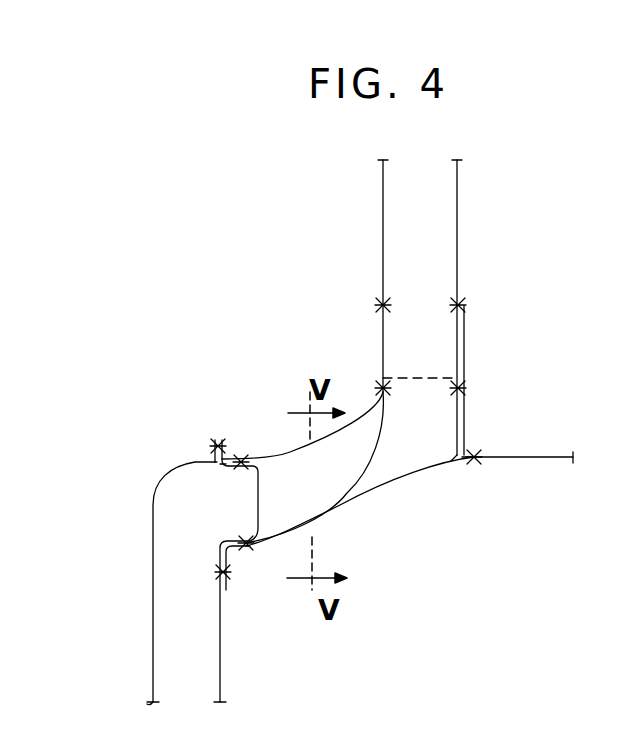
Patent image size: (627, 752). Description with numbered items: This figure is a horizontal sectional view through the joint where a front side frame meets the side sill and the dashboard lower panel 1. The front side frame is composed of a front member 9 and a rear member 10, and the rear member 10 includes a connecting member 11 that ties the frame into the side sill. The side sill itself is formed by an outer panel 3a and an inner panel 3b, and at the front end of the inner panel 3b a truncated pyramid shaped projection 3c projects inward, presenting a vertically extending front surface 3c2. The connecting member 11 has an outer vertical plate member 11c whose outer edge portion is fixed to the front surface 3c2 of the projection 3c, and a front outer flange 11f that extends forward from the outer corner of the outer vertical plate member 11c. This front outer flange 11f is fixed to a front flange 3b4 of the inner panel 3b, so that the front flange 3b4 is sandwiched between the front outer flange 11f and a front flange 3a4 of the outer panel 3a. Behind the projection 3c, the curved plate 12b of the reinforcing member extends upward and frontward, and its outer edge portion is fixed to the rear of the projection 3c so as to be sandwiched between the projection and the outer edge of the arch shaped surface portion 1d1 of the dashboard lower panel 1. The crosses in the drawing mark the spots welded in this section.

The dashboard lower panel 1 is at (533, 456).
The arch shaped surface portion 1d1 is at (393, 484).
The outer panel 3a is at (153, 666).
The front flange 3a4 is at (213, 460).
The inner panel 3b is at (226, 661).
The front flange 3b4 is at (217, 440).
The projection 3c is at (260, 492).
The front surface 3c2 is at (222, 467).
The front member 9 is at (458, 206).
The rear member 10 is at (465, 328).
The connecting member 11 is at (383, 316).
The outer vertical plate member 11c is at (370, 407).
The front outer flange 11f is at (222, 443).
The curved plate 12b is at (375, 451).